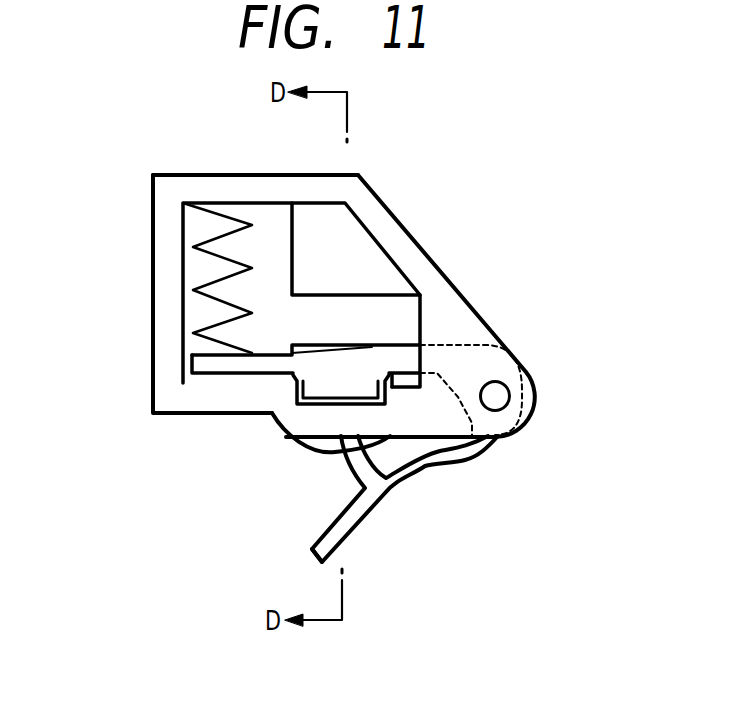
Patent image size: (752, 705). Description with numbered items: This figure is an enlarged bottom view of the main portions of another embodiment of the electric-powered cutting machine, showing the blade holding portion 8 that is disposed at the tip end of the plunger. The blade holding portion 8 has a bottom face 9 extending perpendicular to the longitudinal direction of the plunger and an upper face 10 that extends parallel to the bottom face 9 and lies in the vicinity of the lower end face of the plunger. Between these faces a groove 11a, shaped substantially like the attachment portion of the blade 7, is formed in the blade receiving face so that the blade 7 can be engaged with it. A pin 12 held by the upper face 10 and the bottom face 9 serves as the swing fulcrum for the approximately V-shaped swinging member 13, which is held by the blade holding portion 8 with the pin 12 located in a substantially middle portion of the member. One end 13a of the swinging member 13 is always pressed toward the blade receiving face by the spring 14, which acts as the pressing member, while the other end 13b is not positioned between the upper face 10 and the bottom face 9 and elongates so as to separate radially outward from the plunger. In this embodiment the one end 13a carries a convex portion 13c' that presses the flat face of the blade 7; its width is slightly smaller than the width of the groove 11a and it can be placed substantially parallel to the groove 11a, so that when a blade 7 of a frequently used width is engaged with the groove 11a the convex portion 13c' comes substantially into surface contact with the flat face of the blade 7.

The blade 7 is at (362, 397).
The blade holding portion 8 is at (160, 177).
The bottom face 9 is at (313, 177).
The upper face 10 is at (403, 325).
The groove 11a is at (321, 405).
The pin 12 is at (493, 397).
The swinging member 13 is at (468, 373).
The one end of the swinging member 13a is at (187, 367).
The other end of the swinging member 13b is at (323, 542).
The convex portion 13c' is at (303, 430).
The spring 14 is at (207, 282).